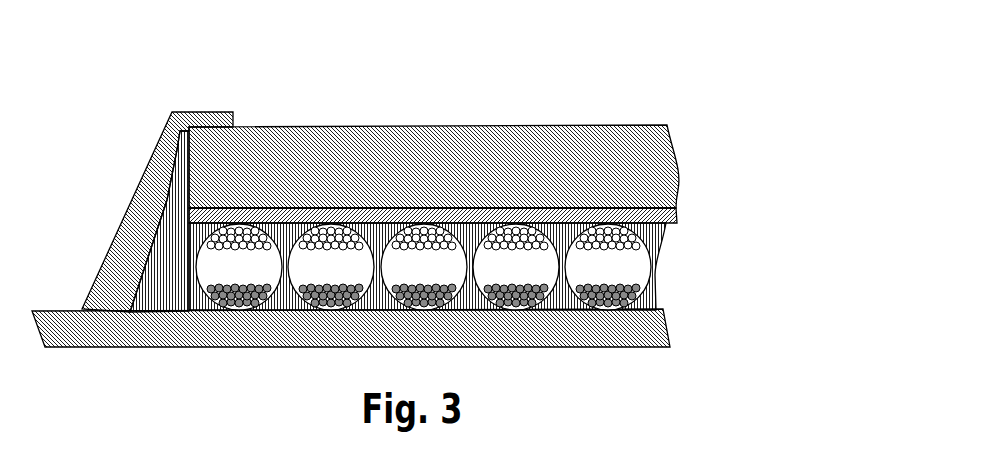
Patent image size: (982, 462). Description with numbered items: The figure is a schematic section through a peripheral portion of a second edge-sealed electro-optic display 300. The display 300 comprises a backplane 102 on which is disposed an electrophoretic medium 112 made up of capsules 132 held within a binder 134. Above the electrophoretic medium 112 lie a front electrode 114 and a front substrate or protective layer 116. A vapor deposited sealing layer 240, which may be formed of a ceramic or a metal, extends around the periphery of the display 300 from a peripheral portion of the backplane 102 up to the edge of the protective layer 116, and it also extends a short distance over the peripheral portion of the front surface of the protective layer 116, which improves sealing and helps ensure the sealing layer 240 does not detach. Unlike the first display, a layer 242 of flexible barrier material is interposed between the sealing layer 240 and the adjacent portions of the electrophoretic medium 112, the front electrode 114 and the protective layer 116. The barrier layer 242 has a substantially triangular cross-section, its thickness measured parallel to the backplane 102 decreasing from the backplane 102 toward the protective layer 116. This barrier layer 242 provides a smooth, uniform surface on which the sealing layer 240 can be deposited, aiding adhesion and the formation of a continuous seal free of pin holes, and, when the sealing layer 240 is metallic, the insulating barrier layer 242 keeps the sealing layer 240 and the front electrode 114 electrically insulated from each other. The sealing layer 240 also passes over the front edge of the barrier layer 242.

The sealed display 300 is at (432, 210).
The backplane 102 is at (637, 332).
The electrophoretic medium 112 is at (495, 192).
The front electrode 114 is at (403, 215).
The protective layer 116 is at (328, 185).
The capsules 132 is at (573, 210).
The binder 134 is at (472, 237).
The sealing layer 240 is at (145, 200).
The flexible barrier material layer 242 is at (182, 205).